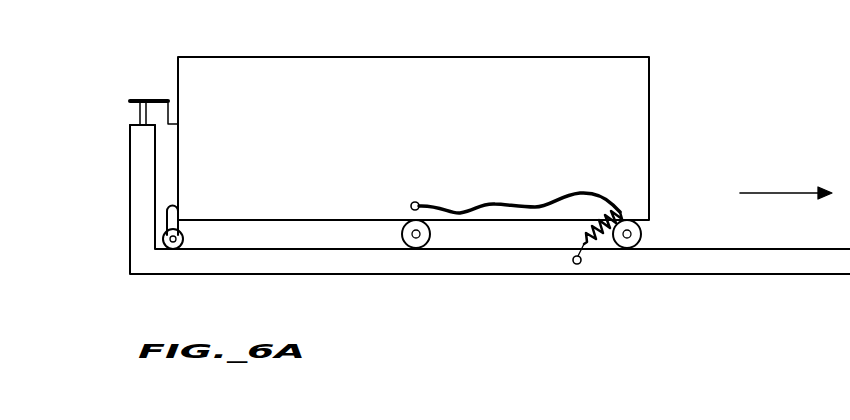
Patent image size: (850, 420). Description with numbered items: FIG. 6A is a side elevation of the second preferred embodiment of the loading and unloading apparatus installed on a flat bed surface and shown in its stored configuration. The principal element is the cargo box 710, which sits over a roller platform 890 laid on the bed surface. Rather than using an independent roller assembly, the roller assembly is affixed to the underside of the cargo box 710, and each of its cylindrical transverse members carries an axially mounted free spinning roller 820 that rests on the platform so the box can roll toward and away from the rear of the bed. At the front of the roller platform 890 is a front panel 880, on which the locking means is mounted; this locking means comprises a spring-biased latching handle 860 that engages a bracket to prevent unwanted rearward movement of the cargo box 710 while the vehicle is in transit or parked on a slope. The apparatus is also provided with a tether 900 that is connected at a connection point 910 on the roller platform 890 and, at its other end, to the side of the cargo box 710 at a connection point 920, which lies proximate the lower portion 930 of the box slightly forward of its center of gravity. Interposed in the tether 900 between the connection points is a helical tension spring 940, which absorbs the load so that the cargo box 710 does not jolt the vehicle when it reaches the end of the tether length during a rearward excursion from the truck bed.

The cargo box 710 is at (369, 57).
The free spinning roller 820 is at (402, 239).
The spring-biased latching handle 860 is at (140, 99).
The front panel 880 is at (130, 176).
The roller platform 890 is at (440, 262).
The tether 900 is at (513, 202).
The connection point 910 is at (578, 266).
The connection point 920 is at (413, 202).
The lower portion 930 is at (662, 198).
The helical tension spring 940 is at (590, 250).